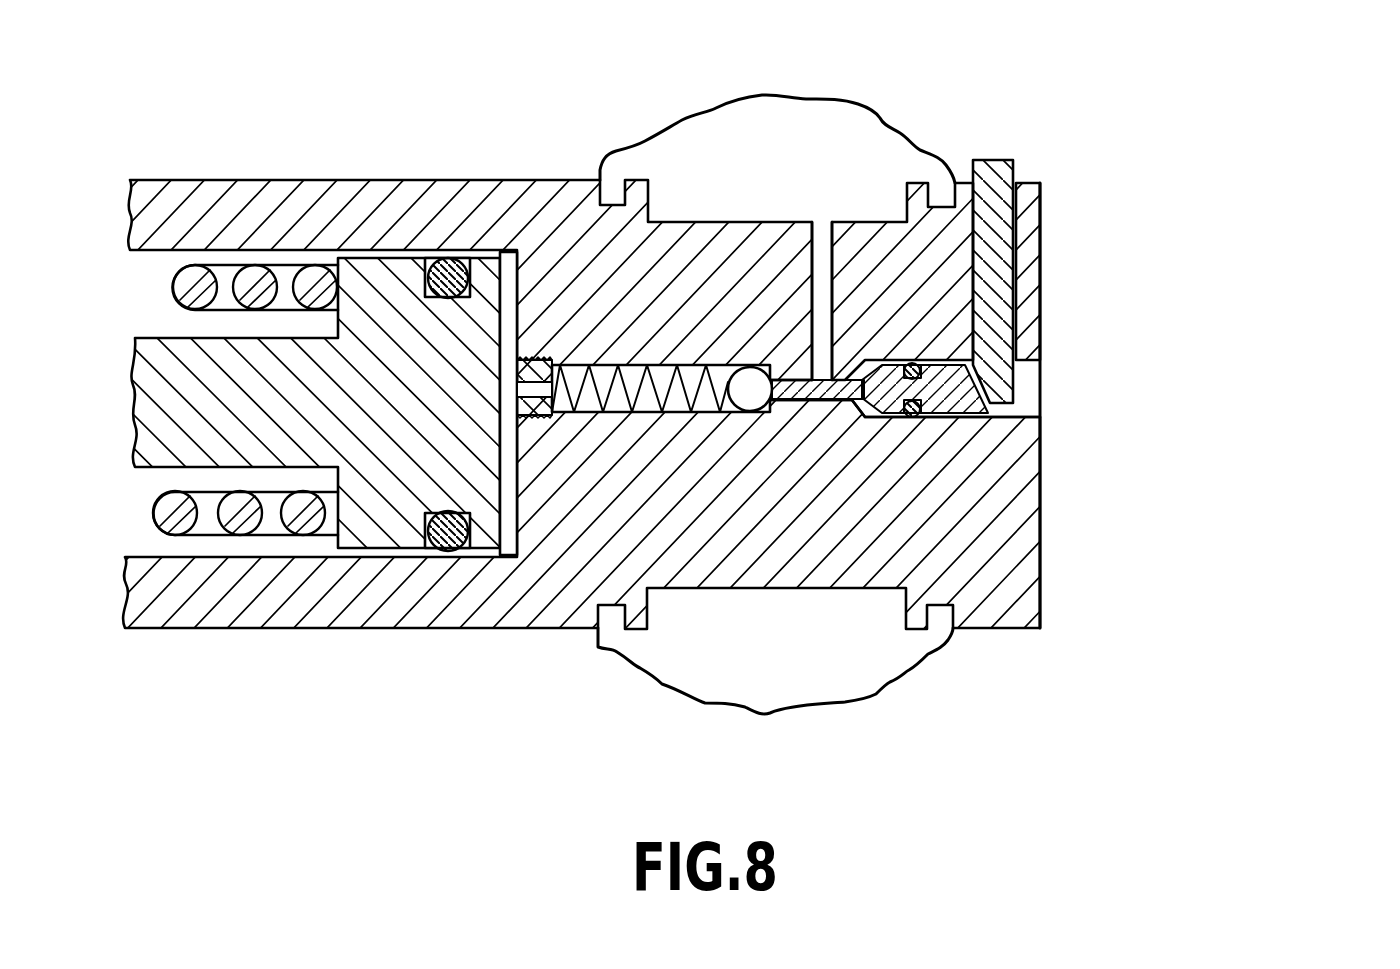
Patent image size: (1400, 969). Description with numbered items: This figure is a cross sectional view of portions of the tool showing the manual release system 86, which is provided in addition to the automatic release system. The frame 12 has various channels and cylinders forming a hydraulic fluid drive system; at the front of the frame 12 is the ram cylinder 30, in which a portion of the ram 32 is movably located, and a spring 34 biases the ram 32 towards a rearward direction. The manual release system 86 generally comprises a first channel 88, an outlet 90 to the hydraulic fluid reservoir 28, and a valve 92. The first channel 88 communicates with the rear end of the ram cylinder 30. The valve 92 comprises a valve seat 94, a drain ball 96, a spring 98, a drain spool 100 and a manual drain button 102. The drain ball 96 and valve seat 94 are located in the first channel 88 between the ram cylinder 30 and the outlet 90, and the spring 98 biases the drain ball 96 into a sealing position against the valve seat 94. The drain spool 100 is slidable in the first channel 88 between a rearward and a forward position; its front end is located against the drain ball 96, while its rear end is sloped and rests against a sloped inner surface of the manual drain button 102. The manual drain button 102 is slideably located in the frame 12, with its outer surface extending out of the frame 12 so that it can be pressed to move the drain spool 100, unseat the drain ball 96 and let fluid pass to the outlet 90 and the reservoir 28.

The frame 12 is at (377, 628).
The hydraulic fluid reservoir 28 is at (953, 650).
The ram cylinder 30 is at (232, 265).
The ram 32 is at (148, 371).
The spring 34 is at (158, 523).
The manual release system 86 is at (1282, 252).
The first channel 88 is at (620, 365).
The outlet 90 is at (825, 228).
The valve 92 is at (945, 427).
The valve seat 94 is at (775, 405).
The drain ball 96 is at (757, 368).
The spring 98 is at (645, 366).
The drain spool 100 is at (925, 362).
The manual drain button 102 is at (990, 160).